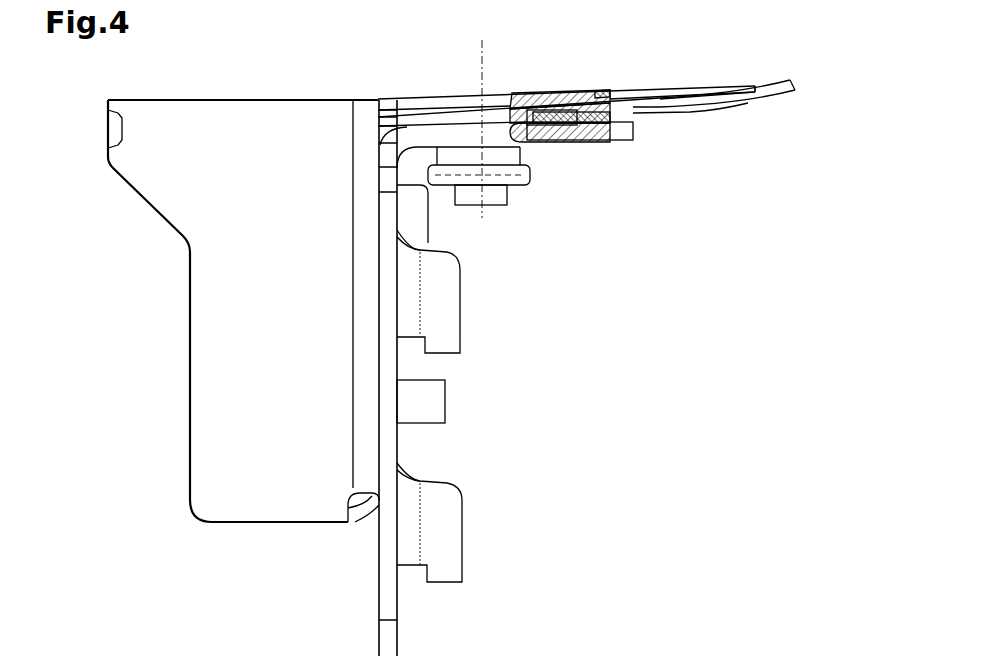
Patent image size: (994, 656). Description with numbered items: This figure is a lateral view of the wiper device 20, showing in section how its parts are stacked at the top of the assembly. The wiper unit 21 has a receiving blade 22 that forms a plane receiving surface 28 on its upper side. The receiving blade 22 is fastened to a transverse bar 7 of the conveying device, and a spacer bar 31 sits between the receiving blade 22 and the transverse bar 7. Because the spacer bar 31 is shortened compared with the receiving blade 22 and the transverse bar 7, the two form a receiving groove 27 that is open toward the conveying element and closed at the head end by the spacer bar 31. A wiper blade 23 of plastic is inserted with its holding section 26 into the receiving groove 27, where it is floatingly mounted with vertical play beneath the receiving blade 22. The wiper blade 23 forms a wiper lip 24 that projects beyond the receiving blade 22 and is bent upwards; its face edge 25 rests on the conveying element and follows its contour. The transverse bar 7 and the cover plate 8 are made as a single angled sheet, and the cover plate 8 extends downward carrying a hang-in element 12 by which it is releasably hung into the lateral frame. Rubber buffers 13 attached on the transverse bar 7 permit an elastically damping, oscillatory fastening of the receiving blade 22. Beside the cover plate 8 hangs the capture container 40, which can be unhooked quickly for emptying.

The transverse bar 7 is at (533, 134).
The cover plate 8 is at (392, 592).
The hang-in element 12 is at (448, 336).
The rubber buffers 13 is at (508, 168).
The wiper device 20 is at (389, 96).
The wiper unit 21 is at (686, 81).
The receiving blade 22 is at (500, 105).
The wiper blade 23 is at (668, 115).
The wiper lip 24 is at (742, 103).
The face edge 25 is at (795, 81).
The holding section 26 is at (601, 89).
The receiving groove 27 is at (533, 112).
The plane receiving surface 28 is at (437, 95).
The spacer bar 31 is at (484, 117).
The capture container 40 is at (159, 221).